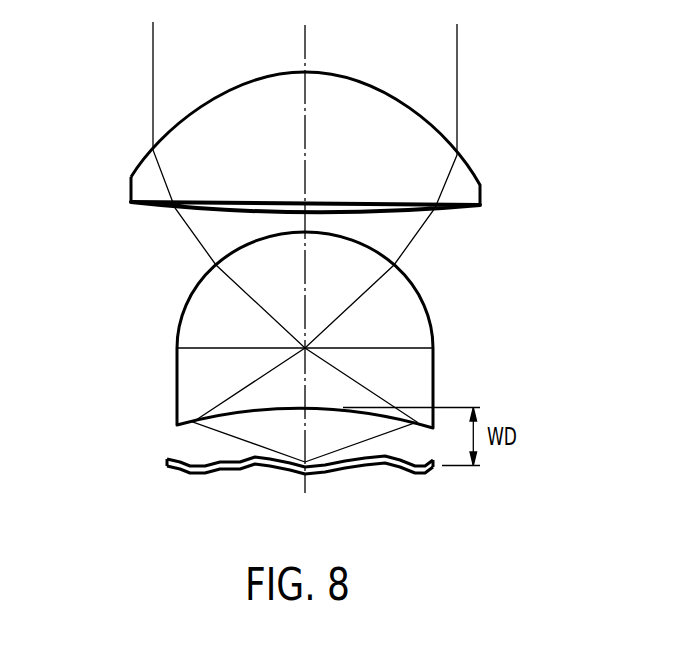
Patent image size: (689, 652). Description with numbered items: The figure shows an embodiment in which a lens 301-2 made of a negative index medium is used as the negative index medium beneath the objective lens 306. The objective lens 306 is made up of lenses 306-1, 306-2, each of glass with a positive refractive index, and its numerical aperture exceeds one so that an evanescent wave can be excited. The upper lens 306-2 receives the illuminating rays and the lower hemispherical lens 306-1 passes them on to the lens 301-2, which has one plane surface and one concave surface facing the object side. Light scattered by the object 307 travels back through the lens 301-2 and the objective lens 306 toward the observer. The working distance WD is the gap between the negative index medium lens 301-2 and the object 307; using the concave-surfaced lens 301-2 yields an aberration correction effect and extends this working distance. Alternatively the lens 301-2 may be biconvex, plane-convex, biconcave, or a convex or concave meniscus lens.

The objective lens 306 is at (301, 212).
The lens 306-2 is at (148, 191).
The lens 306-1 is at (200, 315).
The lens made of a negative index medium 301-2 is at (187, 373).
The object 307 is at (165, 462).